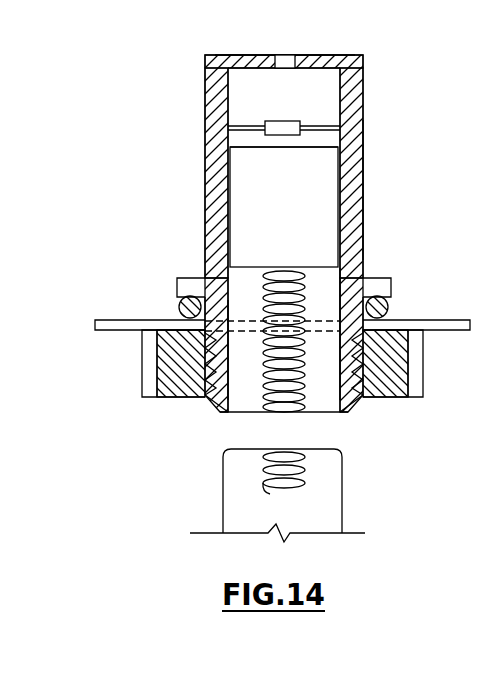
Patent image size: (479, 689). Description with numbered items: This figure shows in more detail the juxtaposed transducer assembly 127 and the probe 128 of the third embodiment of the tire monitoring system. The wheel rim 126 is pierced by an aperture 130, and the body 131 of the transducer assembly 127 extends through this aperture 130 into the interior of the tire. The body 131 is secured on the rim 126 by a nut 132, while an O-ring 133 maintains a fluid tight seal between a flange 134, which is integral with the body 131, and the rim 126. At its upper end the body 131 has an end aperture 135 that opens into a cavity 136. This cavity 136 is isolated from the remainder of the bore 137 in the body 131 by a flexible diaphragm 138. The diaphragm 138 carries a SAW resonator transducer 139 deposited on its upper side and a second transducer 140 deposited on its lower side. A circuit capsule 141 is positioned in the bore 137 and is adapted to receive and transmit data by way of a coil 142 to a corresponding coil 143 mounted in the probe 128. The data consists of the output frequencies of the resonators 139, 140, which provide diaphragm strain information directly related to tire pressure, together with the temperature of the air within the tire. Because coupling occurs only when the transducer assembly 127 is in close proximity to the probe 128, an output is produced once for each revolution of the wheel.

The wheel rim 126 is at (105, 332).
The transducer assembly 127 is at (368, 147).
The probe 128 is at (352, 500).
The aperture 130 is at (340, 332).
The body 131 is at (353, 193).
The nut 132 is at (163, 376).
The O-ring 133 is at (179, 303).
The flange 134 is at (190, 278).
The end aperture 135 is at (286, 62).
The cavity 136 is at (328, 103).
The bore 137 is at (335, 296).
The flexible diaphragm 138 is at (243, 126).
The SAW resonator transducer 139 is at (268, 122).
The second transducer 140 is at (272, 142).
The circuit capsule 141 is at (303, 221).
The coil 142 is at (250, 402).
The coil 143 is at (303, 470).